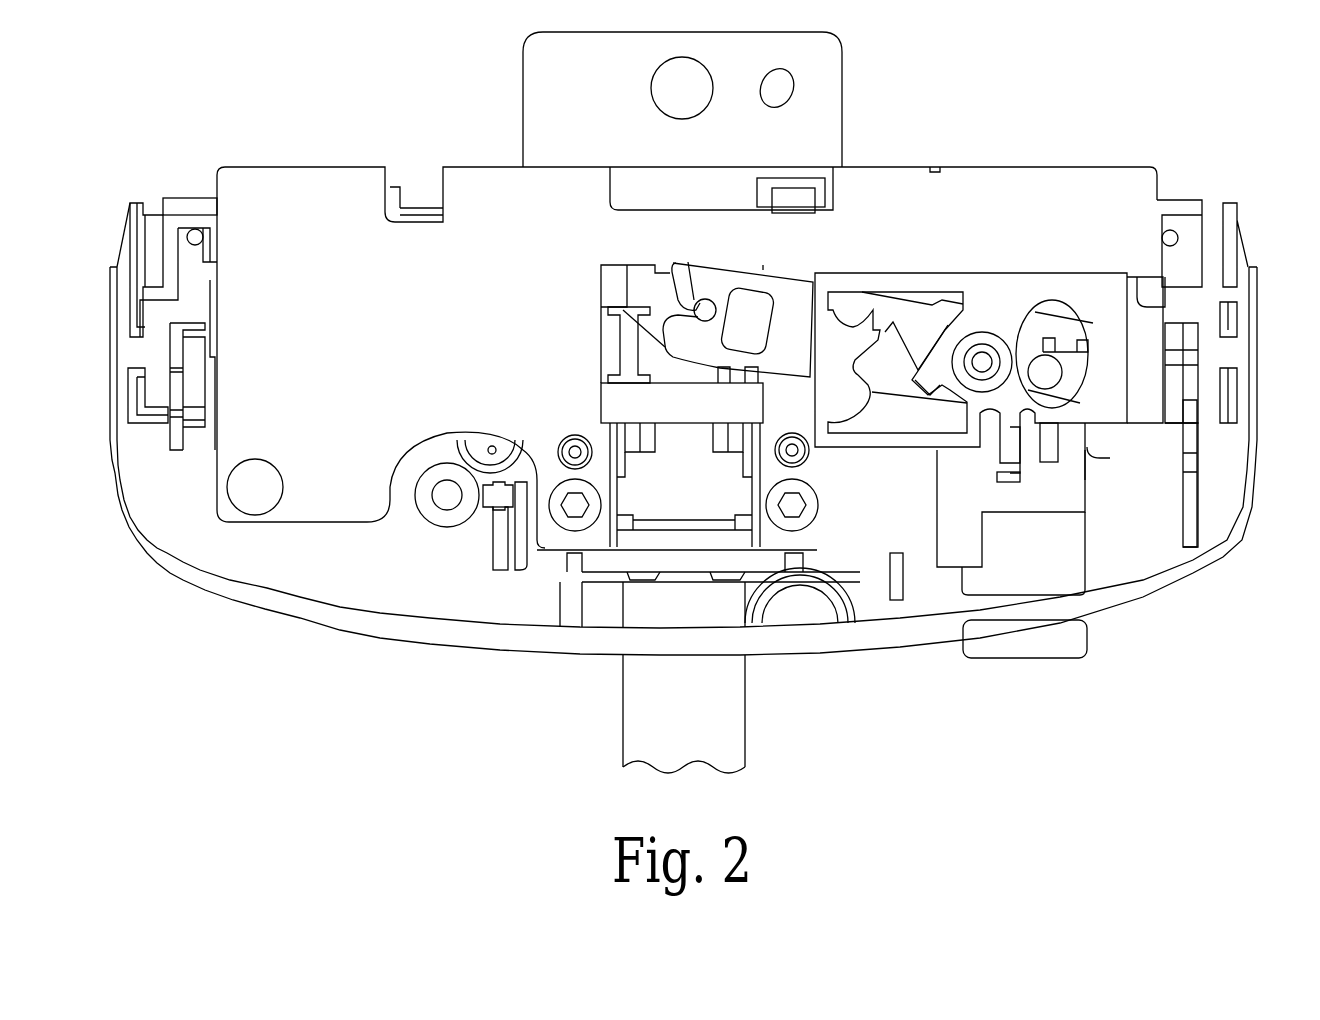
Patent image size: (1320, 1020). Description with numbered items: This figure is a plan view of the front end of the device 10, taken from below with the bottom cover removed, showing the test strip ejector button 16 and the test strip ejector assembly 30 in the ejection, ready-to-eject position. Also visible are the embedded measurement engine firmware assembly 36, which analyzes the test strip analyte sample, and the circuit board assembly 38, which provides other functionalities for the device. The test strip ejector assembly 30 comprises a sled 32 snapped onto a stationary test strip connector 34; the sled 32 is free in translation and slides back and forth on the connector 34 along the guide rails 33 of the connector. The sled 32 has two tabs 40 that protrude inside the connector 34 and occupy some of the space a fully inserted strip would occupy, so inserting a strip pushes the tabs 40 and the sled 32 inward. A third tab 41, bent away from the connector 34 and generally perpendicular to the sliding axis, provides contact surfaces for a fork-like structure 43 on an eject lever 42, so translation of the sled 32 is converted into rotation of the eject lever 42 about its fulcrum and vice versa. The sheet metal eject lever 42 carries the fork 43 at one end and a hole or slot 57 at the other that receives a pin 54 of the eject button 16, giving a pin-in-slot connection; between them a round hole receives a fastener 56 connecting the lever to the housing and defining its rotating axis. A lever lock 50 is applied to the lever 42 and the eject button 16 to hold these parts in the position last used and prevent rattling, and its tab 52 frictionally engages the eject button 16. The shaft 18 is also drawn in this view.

The device 10 is at (1198, 140).
The test strip ejector button 16 is at (1020, 640).
The shaft 18 is at (727, 712).
The test strip ejector assembly 30 is at (1119, 478).
The sled 32 is at (633, 400).
The guide rails 33 is at (668, 485).
The test strip connector 34 is at (653, 507).
The embedded measurement engine firmware assembly 36 is at (300, 350).
The circuit board assembly 38 is at (495, 530).
The tabs 40 is at (727, 368).
The third tab 41 is at (697, 300).
The eject lever 42 is at (787, 320).
The fork-like structure 43 is at (712, 287).
The lever lock 50 is at (1100, 288).
The tab 52 is at (1010, 440).
The pin 54 is at (1050, 372).
The fastener 56 is at (982, 360).
The hole or slot 57 is at (1077, 353).